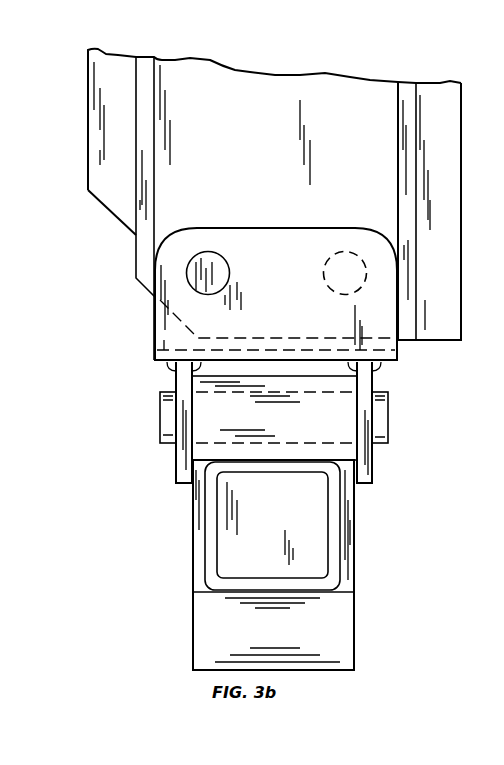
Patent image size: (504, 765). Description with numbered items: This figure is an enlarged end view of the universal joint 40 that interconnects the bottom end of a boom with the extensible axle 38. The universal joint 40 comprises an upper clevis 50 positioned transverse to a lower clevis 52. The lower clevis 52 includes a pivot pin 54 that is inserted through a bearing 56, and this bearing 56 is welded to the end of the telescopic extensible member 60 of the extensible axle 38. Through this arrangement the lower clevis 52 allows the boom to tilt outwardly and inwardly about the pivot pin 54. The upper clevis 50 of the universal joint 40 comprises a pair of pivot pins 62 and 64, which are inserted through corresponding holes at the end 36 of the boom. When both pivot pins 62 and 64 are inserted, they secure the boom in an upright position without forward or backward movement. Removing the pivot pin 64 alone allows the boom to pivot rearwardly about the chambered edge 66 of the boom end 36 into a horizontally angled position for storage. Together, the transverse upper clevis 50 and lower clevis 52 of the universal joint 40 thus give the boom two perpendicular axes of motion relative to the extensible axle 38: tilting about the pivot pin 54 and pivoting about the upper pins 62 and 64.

The end of boom 36 is at (168, 203).
The extensible axle 38 is at (357, 548).
The universal joint 40 is at (158, 365).
The upper clevis 50 is at (155, 333).
The lower clevis 52 is at (363, 475).
The pivot pin 54 is at (390, 423).
The bearing 56 is at (208, 423).
The telescopic extensible member 60 is at (343, 573).
The pivot pin 62 is at (192, 272).
The pivot pin 64 is at (367, 258).
The chambered edge 66 is at (155, 300).